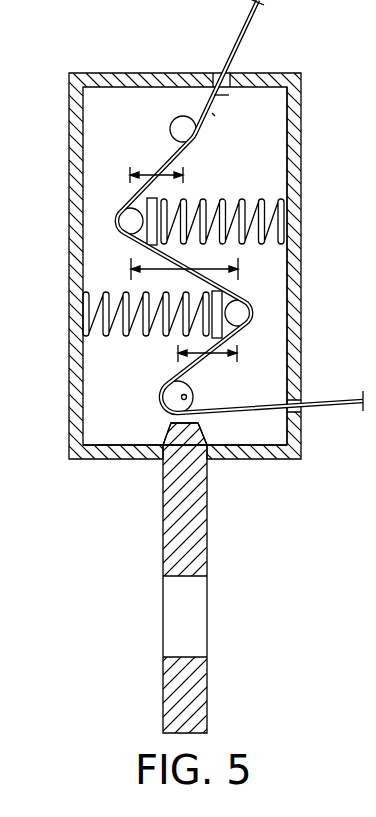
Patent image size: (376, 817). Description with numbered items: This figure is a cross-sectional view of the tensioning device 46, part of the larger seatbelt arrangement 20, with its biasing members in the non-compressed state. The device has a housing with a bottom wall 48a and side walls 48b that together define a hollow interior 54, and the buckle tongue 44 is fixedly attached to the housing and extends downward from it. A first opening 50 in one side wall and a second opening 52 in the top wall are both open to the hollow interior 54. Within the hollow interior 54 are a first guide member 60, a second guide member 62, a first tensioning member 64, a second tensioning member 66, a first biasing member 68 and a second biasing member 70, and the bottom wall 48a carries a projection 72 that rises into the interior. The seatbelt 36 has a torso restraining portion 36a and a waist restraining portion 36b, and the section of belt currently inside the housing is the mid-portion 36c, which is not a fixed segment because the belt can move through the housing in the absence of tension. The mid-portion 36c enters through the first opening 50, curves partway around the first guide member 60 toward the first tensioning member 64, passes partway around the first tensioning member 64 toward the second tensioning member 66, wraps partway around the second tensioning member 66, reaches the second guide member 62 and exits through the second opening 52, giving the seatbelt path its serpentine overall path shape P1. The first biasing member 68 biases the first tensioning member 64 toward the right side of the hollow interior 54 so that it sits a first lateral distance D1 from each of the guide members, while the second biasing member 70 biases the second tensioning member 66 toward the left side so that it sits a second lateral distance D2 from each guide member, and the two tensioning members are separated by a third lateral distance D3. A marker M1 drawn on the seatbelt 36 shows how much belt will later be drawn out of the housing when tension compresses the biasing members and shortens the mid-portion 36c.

The apparatus 20 is at (33, 116).
The seatbelt 36 is at (192, 206).
The torso restraining portion 36a is at (241, 25).
The waist restraining portion 36b is at (335, 398).
The mid-portion 36c is at (128, 199).
The buckle tongue 44 is at (185, 517).
The tensioning device 46 is at (303, 282).
The bottom wall 48a is at (115, 444).
The side walls 48b is at (258, 138).
The first opening 50 is at (293, 413).
The second opening 52 is at (222, 72).
The hollow interior 54 is at (258, 107).
The first guide member 60 is at (170, 398).
The second guide member 62 is at (181, 129).
The first tensioning member 64 is at (241, 313).
The second tensioning member 66 is at (128, 222).
The first biasing member 68 is at (153, 327).
The second biasing member 70 is at (220, 199).
The projection 72 is at (202, 428).
The first lateral distance D1 is at (219, 354).
The second lateral distance D2 is at (154, 174).
The third lateral distance D3 is at (213, 268).
The marker M1 is at (212, 95).
The overall path shape P1 is at (214, 115).